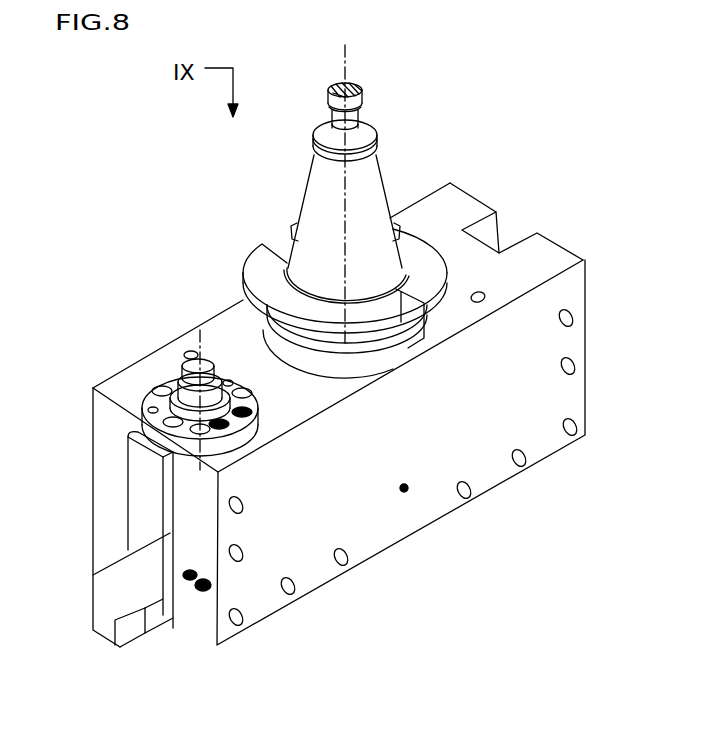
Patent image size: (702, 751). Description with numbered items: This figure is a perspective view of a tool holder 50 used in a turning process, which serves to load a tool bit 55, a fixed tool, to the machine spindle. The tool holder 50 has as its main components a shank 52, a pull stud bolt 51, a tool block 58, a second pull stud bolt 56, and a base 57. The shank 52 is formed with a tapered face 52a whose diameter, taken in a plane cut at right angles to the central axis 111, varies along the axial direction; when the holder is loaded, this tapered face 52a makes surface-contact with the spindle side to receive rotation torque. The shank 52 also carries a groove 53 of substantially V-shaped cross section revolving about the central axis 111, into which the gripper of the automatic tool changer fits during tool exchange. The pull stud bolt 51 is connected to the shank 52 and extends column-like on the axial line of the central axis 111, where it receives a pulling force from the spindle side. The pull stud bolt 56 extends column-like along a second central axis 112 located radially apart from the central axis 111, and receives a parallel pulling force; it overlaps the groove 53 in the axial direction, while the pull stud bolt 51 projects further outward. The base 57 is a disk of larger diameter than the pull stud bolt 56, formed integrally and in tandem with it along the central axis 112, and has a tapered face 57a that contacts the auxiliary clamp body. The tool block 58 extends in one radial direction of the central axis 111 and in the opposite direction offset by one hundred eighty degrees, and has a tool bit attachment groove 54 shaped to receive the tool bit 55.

The tool holder 50 is at (207, 232).
The pull stud bolt 51 is at (333, 120).
The shank 52 is at (298, 191).
The tapered face 52a is at (368, 193).
The groove 53 is at (425, 334).
The tool bit attachment groove 54 is at (143, 490).
The tool bit 55 is at (95, 600).
The pull stud bolt 56 is at (186, 360).
The base 57 is at (252, 422).
The tapered face 57a is at (150, 428).
The tool block 58 is at (425, 488).
The central axis 111 is at (350, 52).
The central axis 112 is at (197, 333).